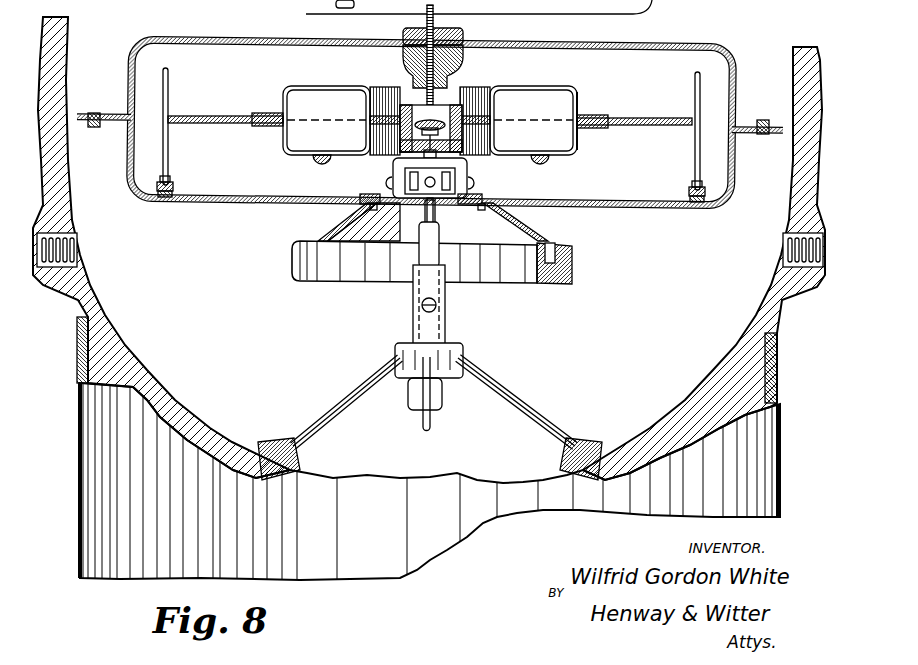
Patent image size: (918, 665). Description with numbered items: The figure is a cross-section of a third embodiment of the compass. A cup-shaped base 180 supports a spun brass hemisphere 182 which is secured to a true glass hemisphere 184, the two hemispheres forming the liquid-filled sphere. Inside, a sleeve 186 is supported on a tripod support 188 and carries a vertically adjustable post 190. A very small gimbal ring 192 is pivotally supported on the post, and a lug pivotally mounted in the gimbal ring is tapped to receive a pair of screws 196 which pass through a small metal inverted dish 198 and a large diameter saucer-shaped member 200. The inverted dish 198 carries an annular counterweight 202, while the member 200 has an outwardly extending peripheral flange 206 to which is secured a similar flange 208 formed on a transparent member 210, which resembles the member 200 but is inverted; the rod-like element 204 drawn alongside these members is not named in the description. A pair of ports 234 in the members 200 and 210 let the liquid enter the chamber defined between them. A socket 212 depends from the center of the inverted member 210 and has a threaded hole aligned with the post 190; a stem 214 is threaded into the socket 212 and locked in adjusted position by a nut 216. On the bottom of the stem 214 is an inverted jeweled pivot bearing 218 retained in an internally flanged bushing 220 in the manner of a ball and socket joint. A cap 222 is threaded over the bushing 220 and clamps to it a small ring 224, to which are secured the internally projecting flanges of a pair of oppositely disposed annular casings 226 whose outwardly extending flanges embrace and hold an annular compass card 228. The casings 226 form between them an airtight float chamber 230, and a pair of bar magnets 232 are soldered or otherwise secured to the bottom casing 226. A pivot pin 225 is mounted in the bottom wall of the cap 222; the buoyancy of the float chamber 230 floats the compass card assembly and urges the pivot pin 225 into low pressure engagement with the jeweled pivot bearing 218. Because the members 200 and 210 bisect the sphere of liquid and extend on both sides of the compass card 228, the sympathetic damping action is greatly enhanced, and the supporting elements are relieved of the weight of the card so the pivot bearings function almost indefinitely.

The cup-shaped base 180 is at (78, 463).
The spun brass hemisphere 182 is at (76, 300).
The true glass hemisphere 184 is at (66, 28).
The sleeve 186 is at (447, 330).
The tripod support 188 is at (518, 405).
The vertically adjustable post 190 is at (440, 240).
The gimbal ring 192 is at (420, 188).
The screws 196 is at (434, 201).
The inverted dish 198 is at (522, 220).
The saucer-shaped member 200 is at (325, 195).
The annular counterweight 202 is at (572, 253).
The rod 204 is at (167, 78).
The peripheral flange 206 is at (760, 137).
The flange 208 is at (765, 128).
The transparent member 210 is at (645, 46).
The socket 212 is at (402, 55).
The stem 214 is at (435, 106).
The nut 216 is at (402, 37).
The jeweled pivot bearing 218 is at (442, 122).
The internally flanged bushing 220 is at (418, 112).
The cap 222 is at (398, 150).
The small ring 224 is at (516, 125).
The pivot pin 225 is at (462, 150).
The annular casings 226 is at (585, 103).
The annular compass card 228 is at (652, 126).
The float chamber 230 is at (307, 95).
The bar magnets 232 is at (545, 168).
The ports 234 is at (498, 48).